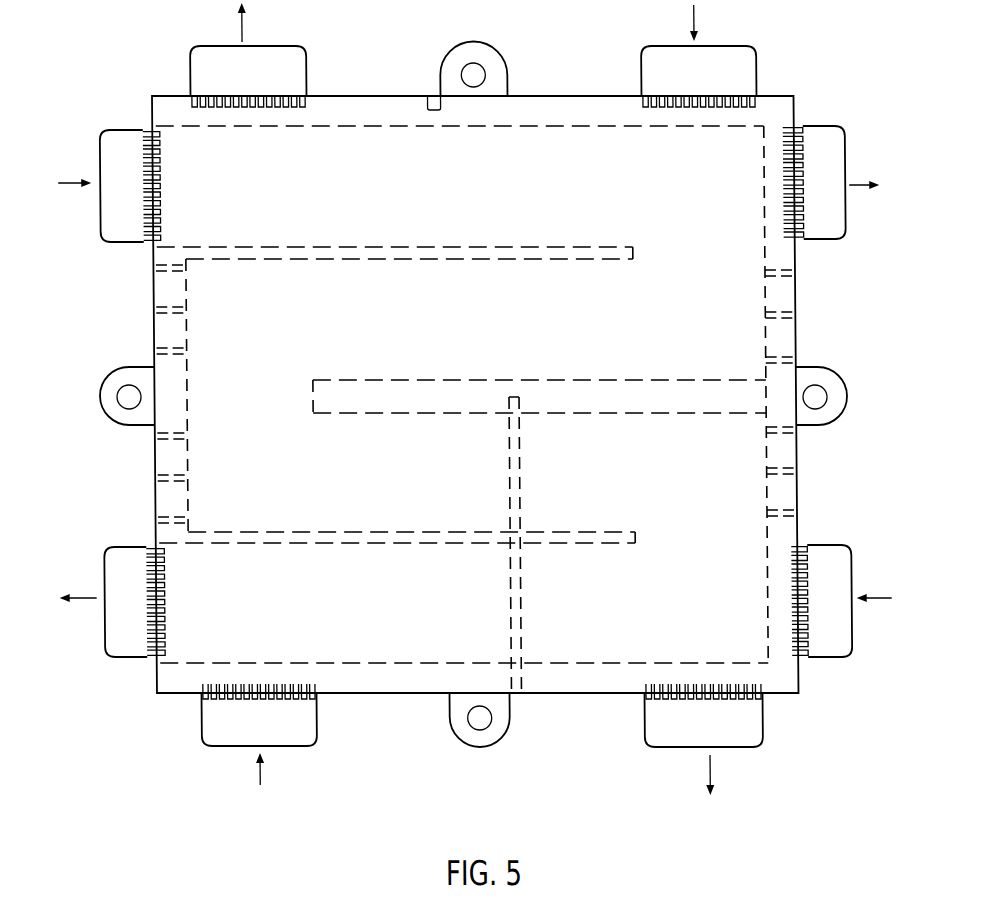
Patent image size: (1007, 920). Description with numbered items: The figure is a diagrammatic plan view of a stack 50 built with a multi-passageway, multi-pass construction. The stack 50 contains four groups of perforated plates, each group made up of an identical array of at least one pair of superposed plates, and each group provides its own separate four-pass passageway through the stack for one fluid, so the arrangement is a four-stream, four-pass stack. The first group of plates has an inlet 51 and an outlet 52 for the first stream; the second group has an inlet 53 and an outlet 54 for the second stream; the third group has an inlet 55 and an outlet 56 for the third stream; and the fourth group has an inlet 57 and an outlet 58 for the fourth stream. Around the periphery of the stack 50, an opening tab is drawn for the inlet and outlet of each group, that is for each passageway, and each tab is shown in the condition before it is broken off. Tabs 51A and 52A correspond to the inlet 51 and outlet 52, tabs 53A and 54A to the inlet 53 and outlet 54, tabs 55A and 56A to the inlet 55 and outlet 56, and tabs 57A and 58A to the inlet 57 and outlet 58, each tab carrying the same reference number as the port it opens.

The stack 50 is at (381, 78).
The inlet 51 is at (273, 769).
The outlet 52 is at (697, 775).
The inlet 53 is at (74, 167).
The outlet 54 is at (77, 585).
The inlet 55 is at (681, 22).
The outlet 56 is at (255, 22).
The inlet 57 is at (873, 584).
The outlet 58 is at (864, 171).
The opening tab 51A is at (213, 730).
The opening tab 52A is at (745, 725).
The opening tab 53A is at (127, 155).
The opening tab 54A is at (118, 605).
The opening tab 55A is at (745, 78).
The opening tab 56A is at (215, 70).
The opening tab 57A is at (828, 568).
The opening tab 58A is at (820, 152).